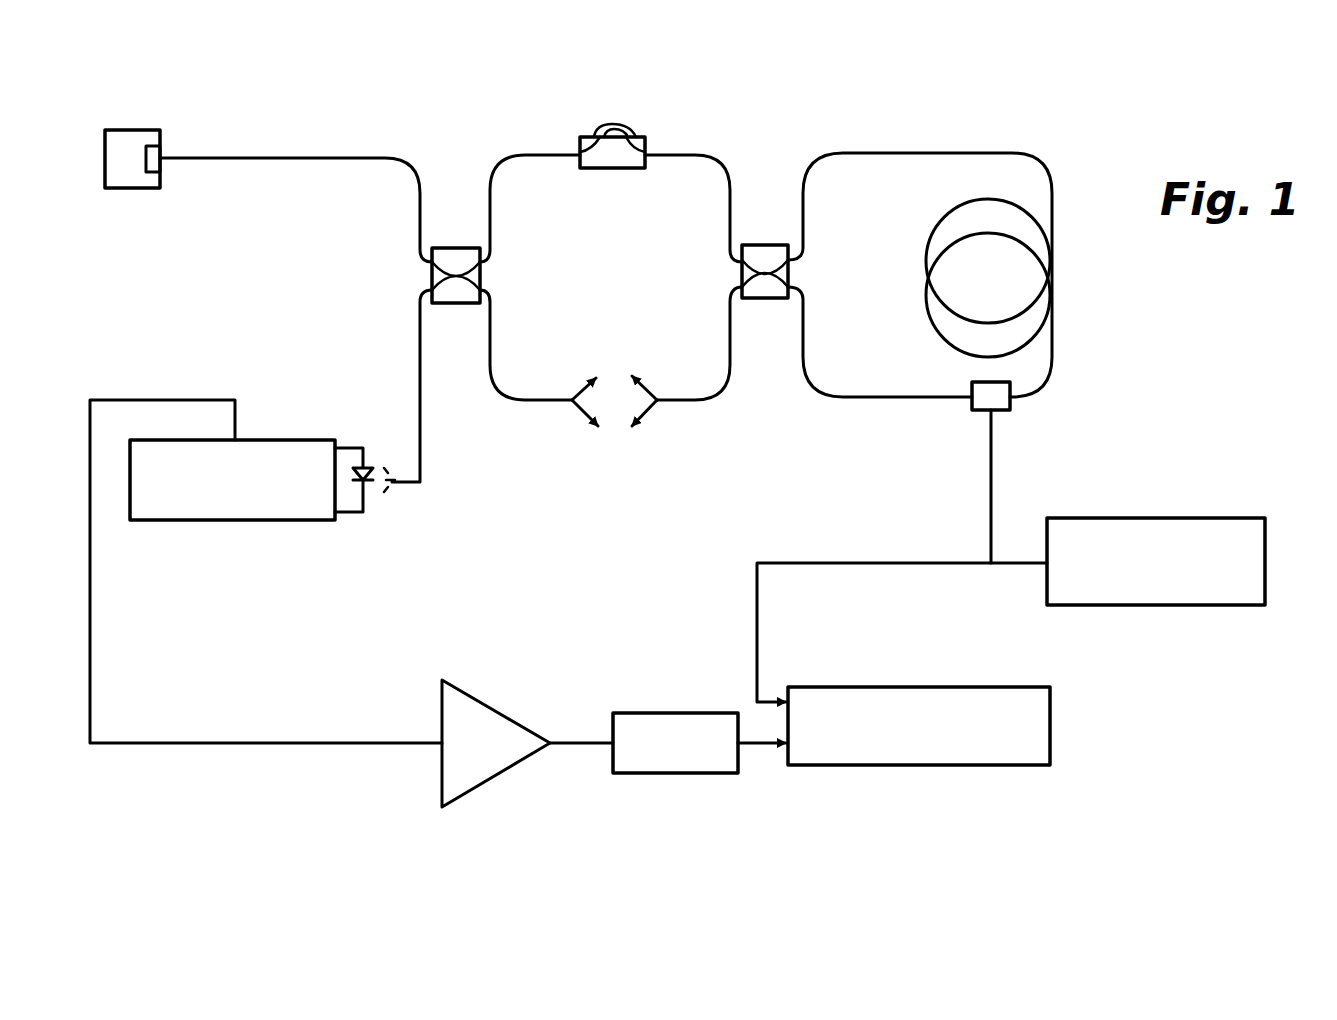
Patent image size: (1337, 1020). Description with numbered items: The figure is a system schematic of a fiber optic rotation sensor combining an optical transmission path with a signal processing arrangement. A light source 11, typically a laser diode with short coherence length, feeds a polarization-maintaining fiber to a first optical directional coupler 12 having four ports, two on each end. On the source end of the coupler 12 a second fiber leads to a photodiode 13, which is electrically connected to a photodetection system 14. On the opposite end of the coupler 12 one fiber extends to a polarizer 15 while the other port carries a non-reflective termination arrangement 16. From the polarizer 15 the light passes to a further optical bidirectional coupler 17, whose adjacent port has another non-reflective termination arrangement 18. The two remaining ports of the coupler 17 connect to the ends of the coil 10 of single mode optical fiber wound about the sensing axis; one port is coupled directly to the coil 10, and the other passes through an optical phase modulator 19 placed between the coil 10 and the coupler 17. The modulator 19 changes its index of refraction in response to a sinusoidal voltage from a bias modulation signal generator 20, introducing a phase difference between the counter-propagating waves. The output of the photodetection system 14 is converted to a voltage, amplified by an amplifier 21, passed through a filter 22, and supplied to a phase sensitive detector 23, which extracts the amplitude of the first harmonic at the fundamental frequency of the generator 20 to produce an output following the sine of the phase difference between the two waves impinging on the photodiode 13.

The coil 10 is at (932, 226).
The light source 11 is at (130, 130).
The first optical directional coupler 12 is at (458, 248).
The photodiode 13 is at (365, 467).
The photodetection system 14 is at (268, 440).
The polarizer 15 is at (585, 137).
The non-reflective termination arrangement 16 is at (580, 392).
The optical bidirectional coupler 17 is at (765, 245).
The non-reflective termination arrangement 18 is at (650, 392).
The optical phase modulator 19 is at (982, 382).
The bias modulation signal generator 20 is at (1205, 518).
The amplifier 21 is at (478, 700).
The filter 22 is at (705, 713).
The phase sensitive detector 23 is at (885, 687).